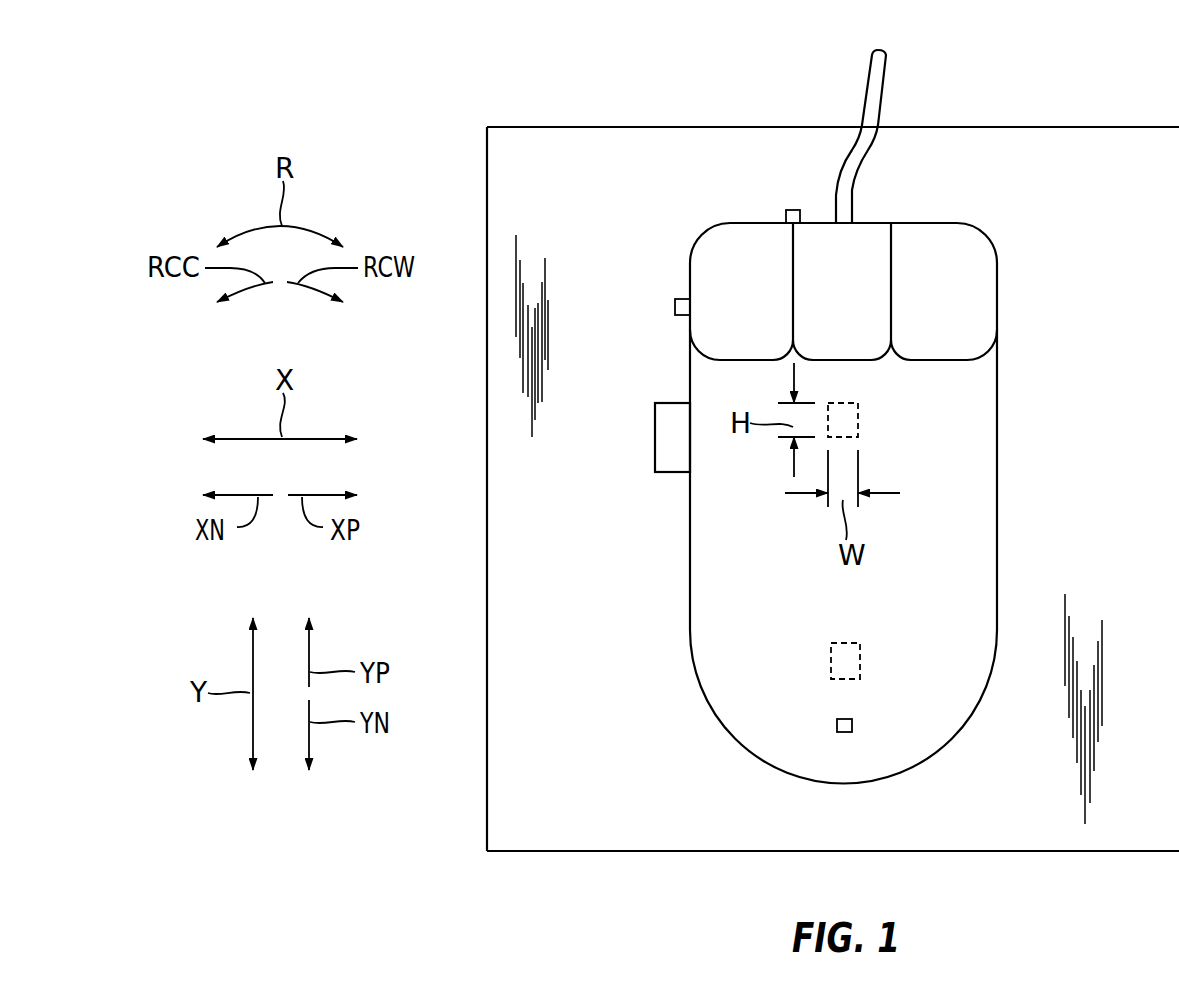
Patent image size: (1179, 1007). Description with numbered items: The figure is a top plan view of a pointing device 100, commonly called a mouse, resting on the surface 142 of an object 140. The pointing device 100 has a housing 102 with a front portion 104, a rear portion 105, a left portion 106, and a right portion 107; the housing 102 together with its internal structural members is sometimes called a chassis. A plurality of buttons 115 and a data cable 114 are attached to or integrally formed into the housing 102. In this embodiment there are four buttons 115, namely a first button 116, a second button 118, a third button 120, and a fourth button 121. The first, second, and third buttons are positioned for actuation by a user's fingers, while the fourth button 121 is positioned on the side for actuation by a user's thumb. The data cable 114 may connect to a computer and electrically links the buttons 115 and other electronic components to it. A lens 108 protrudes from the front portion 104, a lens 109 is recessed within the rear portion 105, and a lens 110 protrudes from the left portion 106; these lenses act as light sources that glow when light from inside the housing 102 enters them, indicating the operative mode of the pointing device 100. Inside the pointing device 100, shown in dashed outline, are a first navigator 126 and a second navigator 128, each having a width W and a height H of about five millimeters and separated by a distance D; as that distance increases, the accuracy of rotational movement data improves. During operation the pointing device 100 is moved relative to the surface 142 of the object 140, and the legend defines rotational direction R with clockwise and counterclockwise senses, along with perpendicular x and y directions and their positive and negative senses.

The pointing device 100 is at (666, 220).
The housing 102 is at (999, 404).
The front portion 104 is at (885, 222).
The rear portion 105 is at (843, 785).
The left portion 106 is at (690, 525).
The right portion 107 is at (997, 524).
The lens 108 is at (786, 217).
The lens 109 is at (852, 726).
The lens 110 is at (675, 306).
The data cable 114 is at (885, 87).
The buttons 115 is at (1008, 292).
The first button 116 is at (721, 242).
The second button 118 is at (824, 247).
The third button 120 is at (965, 242).
The fourth button 121 is at (655, 437).
The first navigator 126 is at (862, 418).
The second navigator 128 is at (862, 659).
The object 140 is at (580, 127).
The surface 142 is at (612, 684).